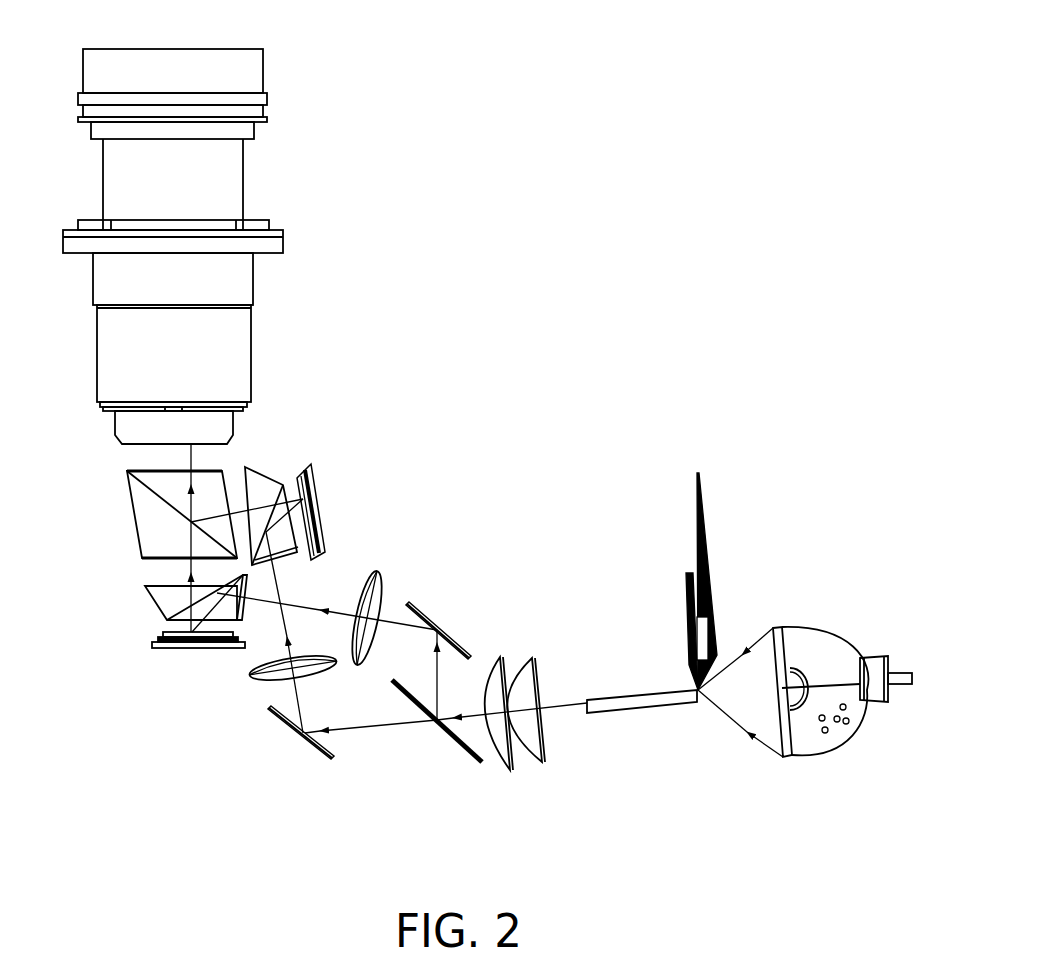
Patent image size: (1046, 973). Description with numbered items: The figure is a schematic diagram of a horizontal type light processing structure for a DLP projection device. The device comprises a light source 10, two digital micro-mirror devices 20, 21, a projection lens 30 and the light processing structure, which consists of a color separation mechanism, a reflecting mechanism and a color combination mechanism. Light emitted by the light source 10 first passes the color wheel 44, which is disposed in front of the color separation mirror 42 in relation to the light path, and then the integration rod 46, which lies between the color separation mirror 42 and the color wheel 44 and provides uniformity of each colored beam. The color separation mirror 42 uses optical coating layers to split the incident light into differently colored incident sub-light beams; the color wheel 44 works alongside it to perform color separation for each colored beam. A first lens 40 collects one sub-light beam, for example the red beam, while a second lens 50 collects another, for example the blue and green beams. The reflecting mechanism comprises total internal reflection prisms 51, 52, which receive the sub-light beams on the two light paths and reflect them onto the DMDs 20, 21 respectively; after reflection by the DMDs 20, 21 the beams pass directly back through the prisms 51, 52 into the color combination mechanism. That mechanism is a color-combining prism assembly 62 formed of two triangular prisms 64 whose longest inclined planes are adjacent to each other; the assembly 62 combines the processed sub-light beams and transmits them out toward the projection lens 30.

The light source 10 is at (812, 633).
The digital micro-mirror device 20 is at (185, 648).
The digital micro-mirror device 21 is at (318, 493).
The projection lens 30 is at (252, 347).
The first lens 40 is at (267, 682).
The color separation mirror 42 is at (457, 740).
The color wheel 44 is at (703, 635).
The integration rod 46 is at (657, 708).
The second lens 50 is at (378, 590).
The total internal reflection prism 51 is at (147, 605).
The total internal reflection prism 52 is at (272, 467).
The color-combining prism assembly 62 is at (125, 505).
The triangular prism 64 is at (163, 480).